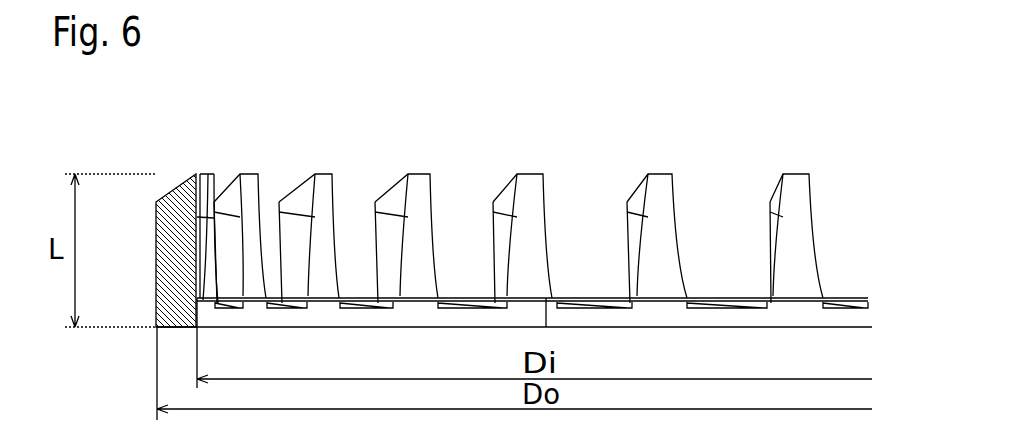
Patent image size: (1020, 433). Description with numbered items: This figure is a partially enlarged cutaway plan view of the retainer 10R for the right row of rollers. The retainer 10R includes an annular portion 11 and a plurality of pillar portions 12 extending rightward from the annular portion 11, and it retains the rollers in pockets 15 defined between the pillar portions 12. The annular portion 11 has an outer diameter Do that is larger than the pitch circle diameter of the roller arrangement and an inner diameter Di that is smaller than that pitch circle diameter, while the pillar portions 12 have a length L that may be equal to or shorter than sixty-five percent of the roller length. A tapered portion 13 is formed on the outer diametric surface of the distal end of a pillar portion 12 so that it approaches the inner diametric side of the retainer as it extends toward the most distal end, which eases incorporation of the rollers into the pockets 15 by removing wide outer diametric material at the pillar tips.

The retainer 10R is at (274, 129).
The annular portion 11 is at (767, 322).
The pillar portion 12 is at (156, 247).
The tapered portion 13 is at (177, 183).
The pocket 15 is at (462, 257).